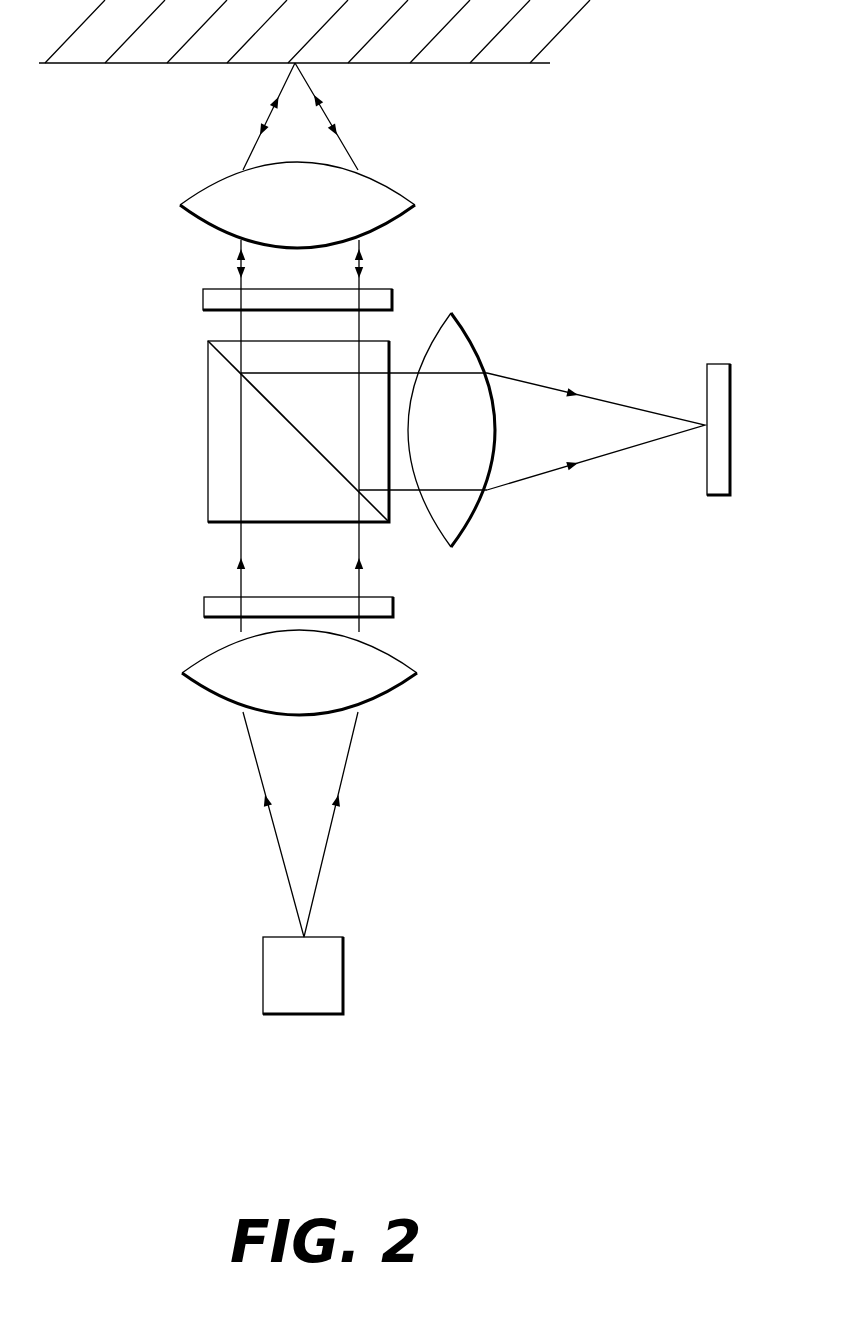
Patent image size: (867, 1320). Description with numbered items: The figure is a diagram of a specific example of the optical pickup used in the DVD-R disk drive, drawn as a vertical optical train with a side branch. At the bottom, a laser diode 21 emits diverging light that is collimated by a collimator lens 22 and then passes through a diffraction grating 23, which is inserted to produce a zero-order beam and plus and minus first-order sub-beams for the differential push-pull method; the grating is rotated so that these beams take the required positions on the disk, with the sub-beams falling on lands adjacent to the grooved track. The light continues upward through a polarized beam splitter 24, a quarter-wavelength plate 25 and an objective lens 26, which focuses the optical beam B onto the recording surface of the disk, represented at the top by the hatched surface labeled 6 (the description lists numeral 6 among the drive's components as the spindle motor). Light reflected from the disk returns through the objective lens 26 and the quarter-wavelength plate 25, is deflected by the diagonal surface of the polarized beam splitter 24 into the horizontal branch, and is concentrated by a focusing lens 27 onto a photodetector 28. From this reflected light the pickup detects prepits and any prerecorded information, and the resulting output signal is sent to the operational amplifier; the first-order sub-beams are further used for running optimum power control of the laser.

The spindle motor 6 is at (503, 64).
The optical beam B is at (327, 113).
The laser diode 21 is at (275, 972).
The collimator lens 22 is at (205, 682).
The diffraction grating 23 is at (205, 608).
The polarized beam splitter 24 is at (287, 422).
The quarter-wavelength plate 25 is at (205, 300).
The objective lens 26 is at (212, 187).
The focusing lens 27 is at (455, 350).
The photodetector 28 is at (718, 368).